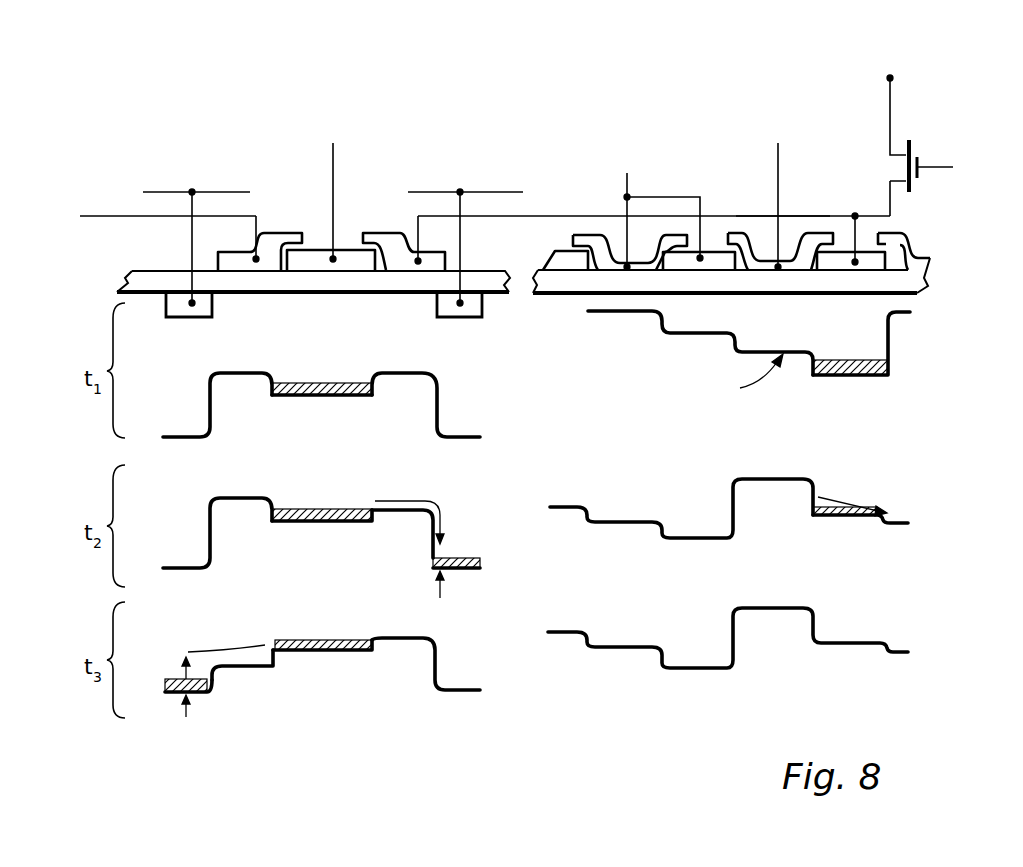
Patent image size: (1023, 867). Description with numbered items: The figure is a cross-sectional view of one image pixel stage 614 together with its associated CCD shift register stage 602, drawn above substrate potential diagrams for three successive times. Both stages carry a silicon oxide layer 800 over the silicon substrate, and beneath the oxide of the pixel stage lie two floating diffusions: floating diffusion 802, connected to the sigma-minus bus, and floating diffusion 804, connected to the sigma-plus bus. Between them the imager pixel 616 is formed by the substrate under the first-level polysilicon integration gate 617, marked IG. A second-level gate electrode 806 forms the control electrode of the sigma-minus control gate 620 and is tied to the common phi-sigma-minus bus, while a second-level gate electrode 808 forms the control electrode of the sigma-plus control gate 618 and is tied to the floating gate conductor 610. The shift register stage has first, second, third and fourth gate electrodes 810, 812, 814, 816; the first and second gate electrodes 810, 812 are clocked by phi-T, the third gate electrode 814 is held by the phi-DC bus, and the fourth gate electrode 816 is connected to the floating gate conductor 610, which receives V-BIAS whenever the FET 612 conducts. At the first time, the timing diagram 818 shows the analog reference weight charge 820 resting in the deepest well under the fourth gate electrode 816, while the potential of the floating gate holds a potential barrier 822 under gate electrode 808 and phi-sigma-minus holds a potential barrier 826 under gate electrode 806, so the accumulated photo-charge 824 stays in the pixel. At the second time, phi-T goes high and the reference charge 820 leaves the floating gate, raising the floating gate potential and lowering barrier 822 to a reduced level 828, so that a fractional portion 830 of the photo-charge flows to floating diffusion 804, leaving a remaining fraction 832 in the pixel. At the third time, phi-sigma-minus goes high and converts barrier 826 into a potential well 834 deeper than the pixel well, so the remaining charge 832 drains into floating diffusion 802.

The pixel stage 614 is at (332, 84).
The shift register stage 602 is at (688, 84).
The silicon oxide layer 800 is at (128, 278).
The floating diffusion 802 is at (212, 305).
The floating diffusion 804 is at (482, 305).
The gate electrode 806 is at (240, 250).
The gate electrode 808 is at (442, 253).
The sigma-minus control gate 620 is at (300, 227).
The sigma-plus control gate 618 is at (375, 227).
The exposure control integration gate 617 is at (315, 250).
The imager pixel 616 is at (354, 332).
The first gate electrode 810 is at (574, 236).
The second gate electrode 812 is at (708, 252).
The third gate electrode 814 is at (816, 236).
The fourth gate electrode 816 is at (866, 252).
The floating gate conductor 610 is at (736, 215).
The FET 612 is at (921, 180).
The timing diagram 818 is at (700, 357).
The analog reference weight charge 820 is at (855, 376).
The potential barrier 822 is at (405, 372).
The accumulated integrated photo-charge 824 is at (335, 383).
The potential barrier 826 is at (233, 372).
The reduced barrier level 828 is at (394, 505).
The fractional portion of photo-charge 830 is at (458, 557).
The remaining fraction of photo-charge 832 is at (322, 508).
The potential well 834 is at (258, 667).